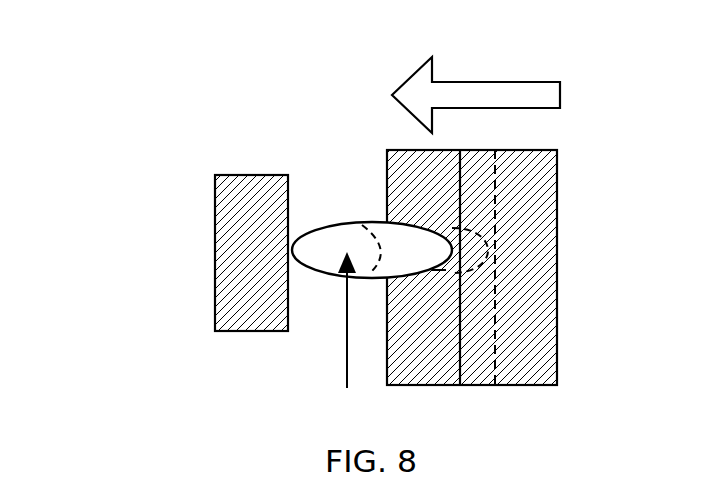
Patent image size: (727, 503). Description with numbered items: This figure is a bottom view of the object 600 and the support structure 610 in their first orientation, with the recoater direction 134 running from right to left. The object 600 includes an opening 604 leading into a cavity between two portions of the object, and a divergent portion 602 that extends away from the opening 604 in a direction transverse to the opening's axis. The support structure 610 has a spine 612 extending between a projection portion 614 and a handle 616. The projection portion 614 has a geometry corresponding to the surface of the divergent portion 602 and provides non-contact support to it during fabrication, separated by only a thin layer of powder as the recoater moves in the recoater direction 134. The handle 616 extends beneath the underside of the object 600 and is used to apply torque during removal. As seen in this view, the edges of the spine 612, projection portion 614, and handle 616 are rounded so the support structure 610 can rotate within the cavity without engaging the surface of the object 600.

The recoater direction 134 is at (412, 78).
The object 600 is at (211, 240).
The divergent portion 602 is at (475, 385).
The opening 604 is at (328, 315).
The support structure 610 is at (347, 388).
The spine 612 is at (327, 240).
The projection portion 614 is at (460, 232).
The handle 616 is at (403, 250).